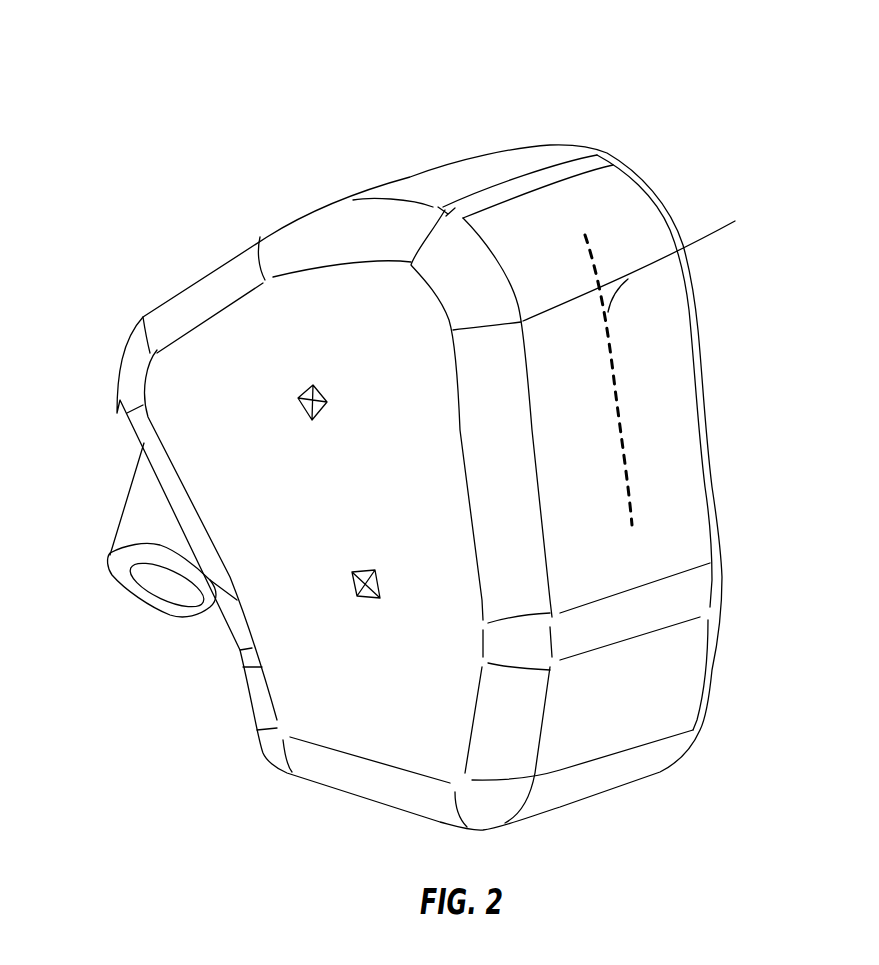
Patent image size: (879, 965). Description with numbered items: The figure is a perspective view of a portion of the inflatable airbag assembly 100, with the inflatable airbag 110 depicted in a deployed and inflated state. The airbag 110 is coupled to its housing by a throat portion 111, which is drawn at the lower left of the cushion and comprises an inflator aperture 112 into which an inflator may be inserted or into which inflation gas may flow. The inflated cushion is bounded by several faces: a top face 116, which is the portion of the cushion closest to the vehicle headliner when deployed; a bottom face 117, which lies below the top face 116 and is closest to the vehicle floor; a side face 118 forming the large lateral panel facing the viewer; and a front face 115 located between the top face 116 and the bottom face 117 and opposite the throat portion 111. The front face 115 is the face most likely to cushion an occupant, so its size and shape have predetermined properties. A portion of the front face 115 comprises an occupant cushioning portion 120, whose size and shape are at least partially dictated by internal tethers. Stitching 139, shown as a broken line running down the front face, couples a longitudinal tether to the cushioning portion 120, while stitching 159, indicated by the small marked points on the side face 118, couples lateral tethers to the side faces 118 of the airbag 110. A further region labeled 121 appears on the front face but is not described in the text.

The inflatable airbag assembly 100 is at (265, 85).
The inflatable airbag 110 is at (347, 162).
The throat portion 111 is at (149, 506).
The inflator aperture 112 is at (155, 612).
The front face 115 is at (592, 402).
The top face 116 is at (500, 183).
The bottom face 117 is at (383, 800).
The side face 118 is at (340, 472).
The occupant cushioning portion 120 is at (634, 340).
The side panel portion 121 is at (677, 410).
The stitching 139 is at (600, 265).
The stitching 159 is at (300, 397).